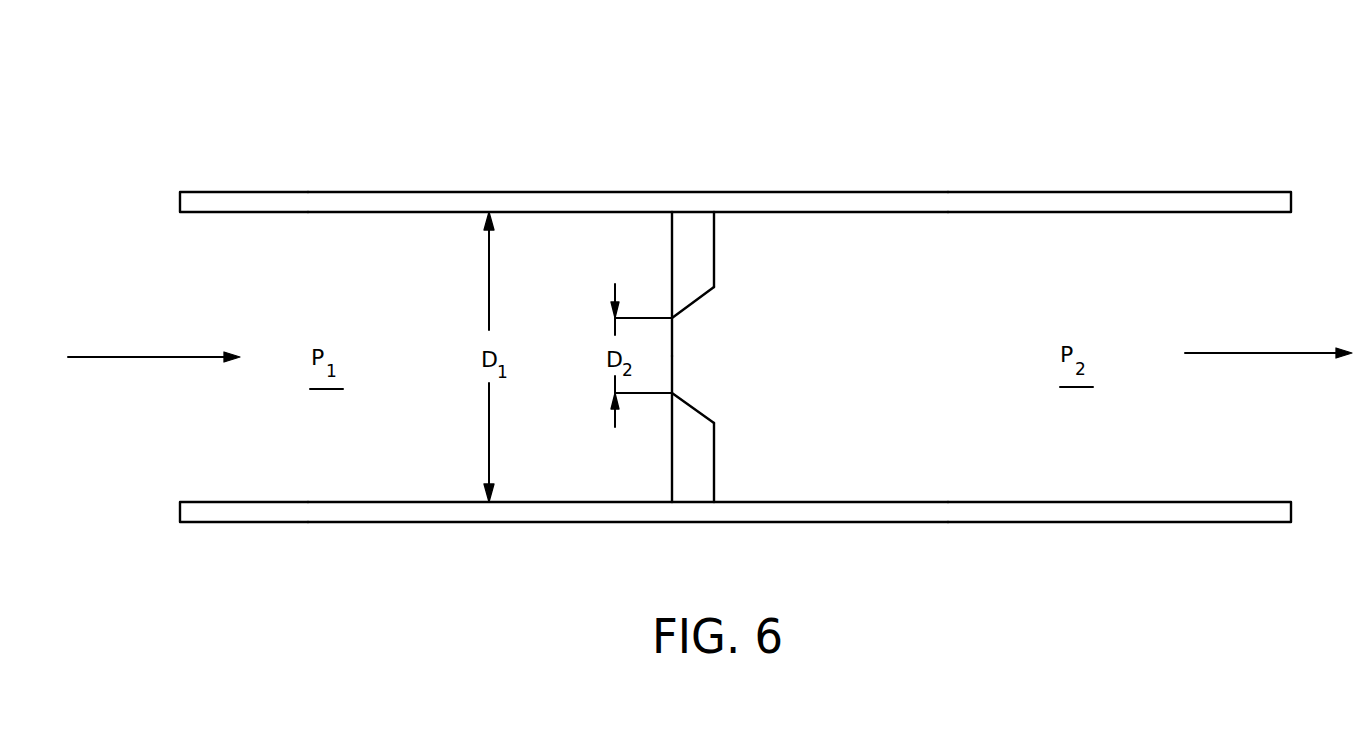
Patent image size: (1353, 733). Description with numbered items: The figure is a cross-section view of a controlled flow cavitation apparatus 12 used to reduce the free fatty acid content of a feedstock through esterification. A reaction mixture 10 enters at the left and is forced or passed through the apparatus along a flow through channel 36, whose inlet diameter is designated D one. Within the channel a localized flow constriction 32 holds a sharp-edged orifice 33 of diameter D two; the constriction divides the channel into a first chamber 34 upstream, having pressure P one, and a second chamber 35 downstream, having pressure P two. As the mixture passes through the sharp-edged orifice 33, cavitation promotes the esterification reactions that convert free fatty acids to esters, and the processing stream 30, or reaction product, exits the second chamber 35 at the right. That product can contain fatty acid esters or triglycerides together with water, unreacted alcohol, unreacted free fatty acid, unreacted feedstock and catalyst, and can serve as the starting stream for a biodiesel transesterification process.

The reaction mixture 10 is at (110, 358).
The controlled flow cavitation apparatus 12 is at (735, 278).
The processing stream 30 is at (1262, 354).
The localized flow constriction 32 is at (704, 256).
The sharp-edged orifice 33 is at (699, 364).
The first chamber 34 is at (306, 233).
The second chamber 35 is at (945, 233).
The flow through channel 36 is at (464, 200).